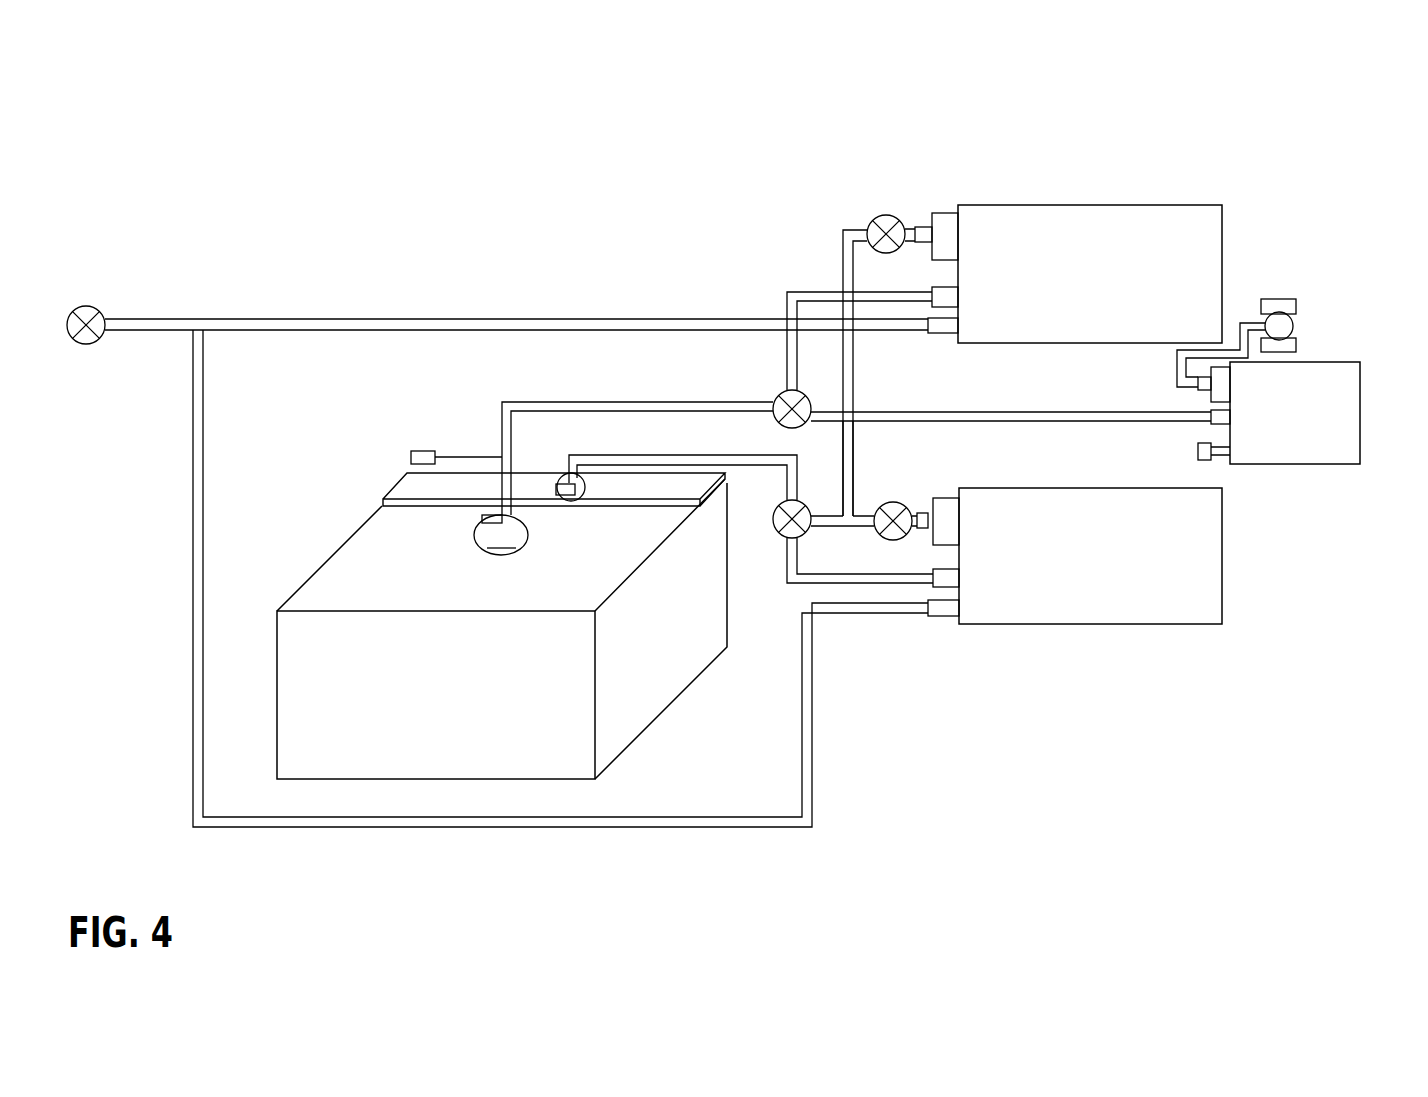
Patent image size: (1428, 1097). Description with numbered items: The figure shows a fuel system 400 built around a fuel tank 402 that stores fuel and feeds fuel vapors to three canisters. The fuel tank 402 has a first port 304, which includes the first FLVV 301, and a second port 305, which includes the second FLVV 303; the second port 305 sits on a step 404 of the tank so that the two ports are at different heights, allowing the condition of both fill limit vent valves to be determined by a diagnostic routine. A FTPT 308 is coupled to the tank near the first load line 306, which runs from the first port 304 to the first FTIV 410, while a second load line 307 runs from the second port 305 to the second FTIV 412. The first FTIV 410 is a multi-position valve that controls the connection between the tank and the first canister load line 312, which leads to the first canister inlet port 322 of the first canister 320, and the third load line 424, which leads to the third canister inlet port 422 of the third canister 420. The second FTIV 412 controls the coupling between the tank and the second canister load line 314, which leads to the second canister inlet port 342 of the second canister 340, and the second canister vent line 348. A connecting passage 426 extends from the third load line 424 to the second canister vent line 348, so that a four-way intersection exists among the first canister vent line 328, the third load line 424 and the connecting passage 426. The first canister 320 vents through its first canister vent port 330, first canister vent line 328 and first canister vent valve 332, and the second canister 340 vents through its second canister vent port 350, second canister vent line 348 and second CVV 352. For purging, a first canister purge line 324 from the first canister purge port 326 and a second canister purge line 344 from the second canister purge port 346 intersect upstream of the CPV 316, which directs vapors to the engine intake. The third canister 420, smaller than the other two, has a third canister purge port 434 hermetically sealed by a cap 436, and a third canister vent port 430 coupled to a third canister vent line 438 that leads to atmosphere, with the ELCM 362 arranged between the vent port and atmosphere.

The fuel system 400 is at (1320, 78).
The first FLVV 301 is at (482, 519).
The second FLVV 303 is at (558, 485).
The first port 304 is at (501, 535).
The second port 305 is at (585, 488).
The first load line 306 is at (590, 401).
The second load line 307 is at (580, 455).
The FTPT 308 is at (411, 452).
The first canister load line 312 is at (787, 292).
The second canister load line 314 is at (782, 583).
The CPV 316 is at (80, 308).
The first canister 320 is at (1137, 205).
The first canister inlet port 322 is at (958, 295).
The first canister purge line 324 is at (443, 318).
The first canister purge port 326 is at (958, 325).
The first canister vent line 328 is at (843, 232).
The first canister vent port 330 is at (942, 212).
The first canister vent valve 332 is at (873, 218).
The second canister 340 is at (1155, 487).
The second canister inlet port 342 is at (959, 581).
The second canister purge line 344 is at (193, 652).
The second canister purge port 346 is at (959, 609).
The second canister vent line 348 is at (867, 528).
The second canister vent port 350 is at (945, 497).
The second CVV 352 is at (895, 502).
The ELCM 362 is at (1287, 298).
The fuel tank 402 is at (328, 560).
The step 404 is at (390, 493).
The first FTIV 410 is at (781, 394).
The second FTIV 412 is at (781, 506).
The third canister 420 is at (1358, 363).
The third canister inlet port 422 is at (1232, 417).
The third load line 424 is at (1046, 410).
The connecting passage 426 is at (843, 447).
The third canister vent port 430 is at (1232, 382).
The third canister purge port 434 is at (1232, 452).
The cap 436 is at (1208, 462).
The third canister vent line 438 is at (1177, 362).